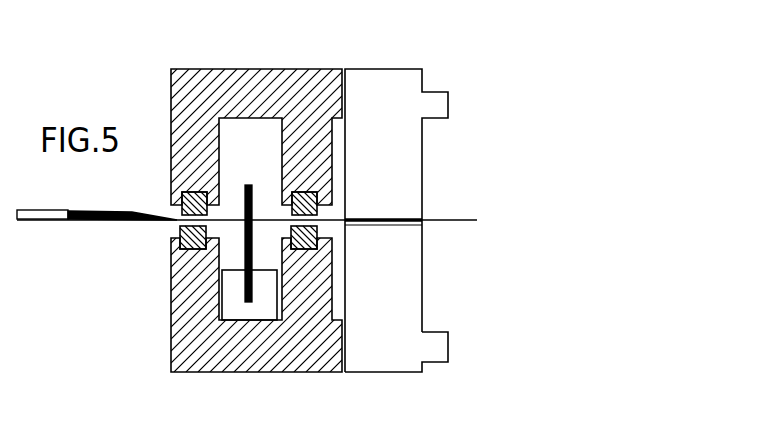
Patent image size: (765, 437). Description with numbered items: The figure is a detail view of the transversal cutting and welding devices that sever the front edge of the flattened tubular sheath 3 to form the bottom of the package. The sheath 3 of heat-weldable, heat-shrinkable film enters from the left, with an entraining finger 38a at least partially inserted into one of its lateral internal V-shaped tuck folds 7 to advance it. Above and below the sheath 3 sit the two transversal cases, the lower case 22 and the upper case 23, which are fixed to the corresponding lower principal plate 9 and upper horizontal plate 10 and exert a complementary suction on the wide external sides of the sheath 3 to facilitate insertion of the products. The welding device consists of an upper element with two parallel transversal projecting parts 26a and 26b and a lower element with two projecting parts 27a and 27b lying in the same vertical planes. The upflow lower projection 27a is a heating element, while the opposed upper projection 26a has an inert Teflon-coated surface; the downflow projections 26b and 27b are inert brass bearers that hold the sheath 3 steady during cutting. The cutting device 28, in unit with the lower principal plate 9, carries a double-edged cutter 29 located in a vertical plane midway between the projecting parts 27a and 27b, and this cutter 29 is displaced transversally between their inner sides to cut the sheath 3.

The flattened tubular sheath 3 is at (97, 224).
The lateral internal V-shaped tuck fold 7 is at (23, 223).
The entraining finger 38a is at (98, 222).
The lower principal plate 9 is at (434, 348).
The upper horizontal plate 10 is at (428, 92).
The lower case 22 is at (365, 333).
The upper case 23 is at (322, 89).
The upper projecting part 26a is at (183, 190).
The upper projecting part 26b is at (304, 194).
The lower projecting part 27a is at (176, 243).
The lower projecting part 27b is at (318, 232).
The cutting device 28 is at (232, 308).
The cutter 29 is at (251, 190).